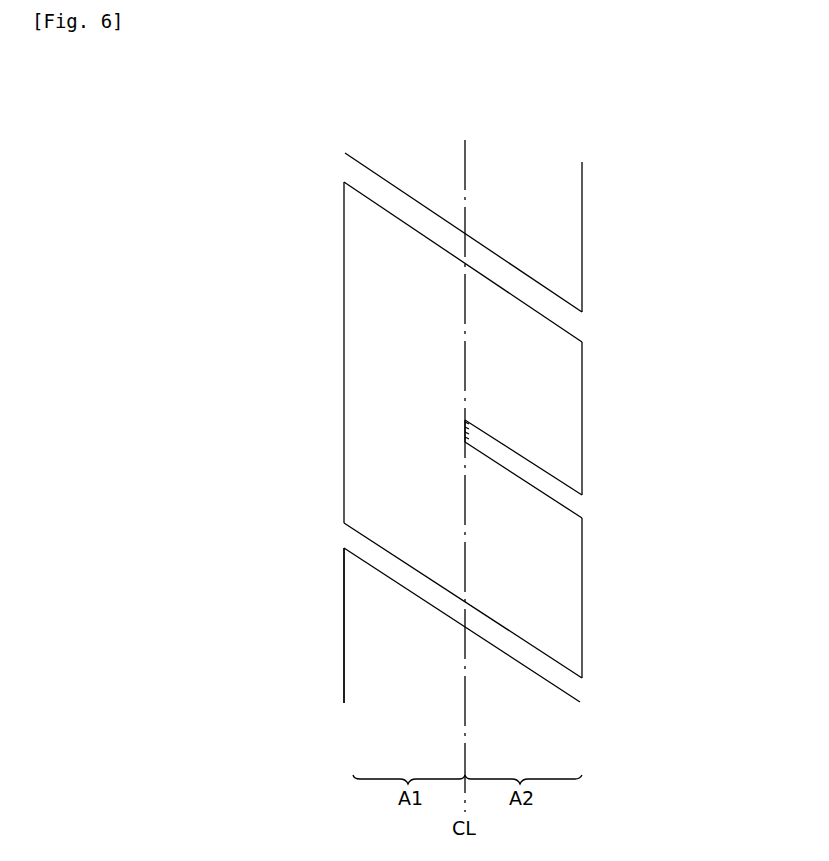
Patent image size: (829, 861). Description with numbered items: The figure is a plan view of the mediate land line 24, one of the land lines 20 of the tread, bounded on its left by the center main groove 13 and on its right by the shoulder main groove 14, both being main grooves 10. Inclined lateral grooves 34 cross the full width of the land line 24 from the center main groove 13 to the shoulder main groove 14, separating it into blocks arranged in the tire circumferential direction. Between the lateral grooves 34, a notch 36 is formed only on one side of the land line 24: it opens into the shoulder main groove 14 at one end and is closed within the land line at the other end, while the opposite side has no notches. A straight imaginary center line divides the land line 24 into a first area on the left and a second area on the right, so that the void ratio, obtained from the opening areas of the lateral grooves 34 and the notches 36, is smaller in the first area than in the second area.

The main groove 10 is at (460, 432).
The center main groove 13 is at (305, 351).
The shoulder main groove 14 is at (688, 360).
The land line 20 is at (295, 656).
The mediate land line 24 is at (354, 681).
The lateral groove 34 is at (356, 190).
The notch 36 is at (576, 516).